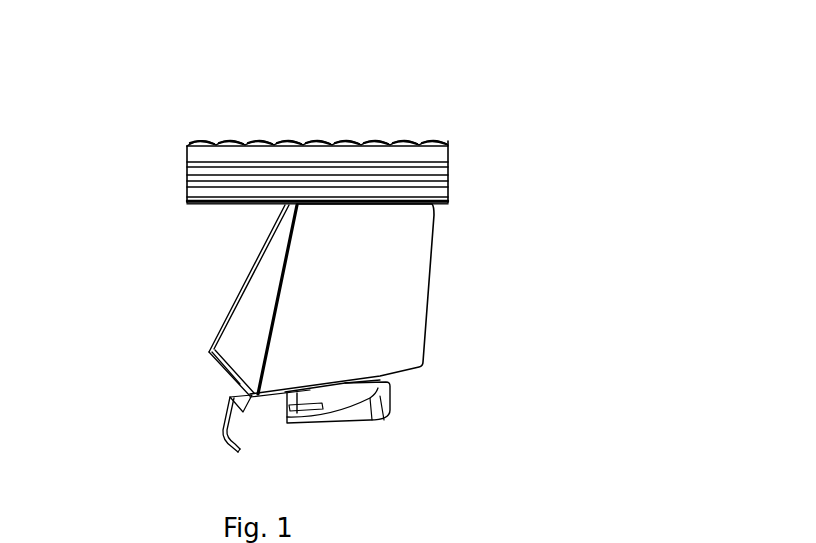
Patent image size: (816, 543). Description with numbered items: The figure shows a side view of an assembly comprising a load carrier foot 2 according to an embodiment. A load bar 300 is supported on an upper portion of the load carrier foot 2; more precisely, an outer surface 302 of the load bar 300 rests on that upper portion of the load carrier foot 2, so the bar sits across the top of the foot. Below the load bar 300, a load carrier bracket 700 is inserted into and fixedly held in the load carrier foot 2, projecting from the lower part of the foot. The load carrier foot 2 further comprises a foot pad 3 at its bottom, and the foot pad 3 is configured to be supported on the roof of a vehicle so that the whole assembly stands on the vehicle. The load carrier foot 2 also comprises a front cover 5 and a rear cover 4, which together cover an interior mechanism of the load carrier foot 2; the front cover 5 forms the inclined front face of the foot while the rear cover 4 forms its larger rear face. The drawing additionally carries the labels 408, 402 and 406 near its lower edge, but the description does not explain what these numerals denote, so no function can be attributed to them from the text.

The load bar 300 is at (373, 126).
The outer surface 302 is at (212, 203).
The load carrier foot 2 is at (215, 283).
The rear cover 4 is at (397, 312).
The front cover 5 is at (243, 373).
The foot pad 3 is at (402, 408).
The load carrier bracket 700 is at (209, 429).
The element 408 is at (512, 542).
The element 402 is at (667, 521).
The element 406 is at (568, 534).